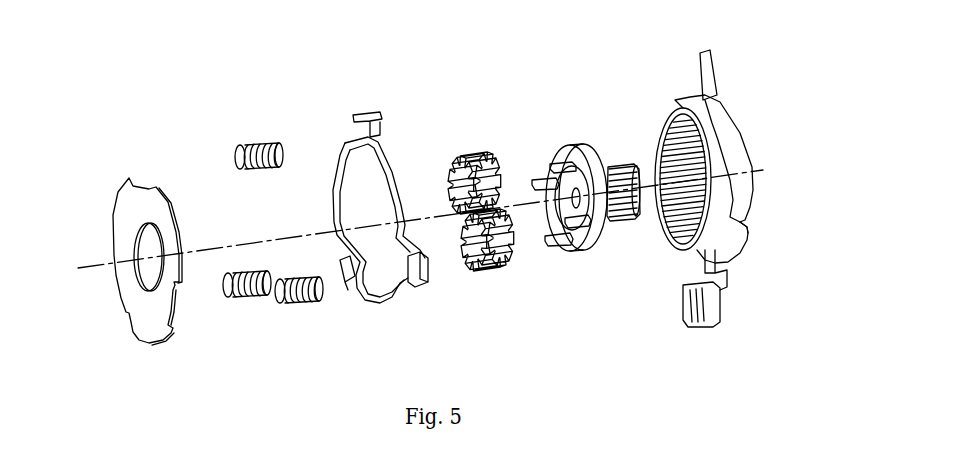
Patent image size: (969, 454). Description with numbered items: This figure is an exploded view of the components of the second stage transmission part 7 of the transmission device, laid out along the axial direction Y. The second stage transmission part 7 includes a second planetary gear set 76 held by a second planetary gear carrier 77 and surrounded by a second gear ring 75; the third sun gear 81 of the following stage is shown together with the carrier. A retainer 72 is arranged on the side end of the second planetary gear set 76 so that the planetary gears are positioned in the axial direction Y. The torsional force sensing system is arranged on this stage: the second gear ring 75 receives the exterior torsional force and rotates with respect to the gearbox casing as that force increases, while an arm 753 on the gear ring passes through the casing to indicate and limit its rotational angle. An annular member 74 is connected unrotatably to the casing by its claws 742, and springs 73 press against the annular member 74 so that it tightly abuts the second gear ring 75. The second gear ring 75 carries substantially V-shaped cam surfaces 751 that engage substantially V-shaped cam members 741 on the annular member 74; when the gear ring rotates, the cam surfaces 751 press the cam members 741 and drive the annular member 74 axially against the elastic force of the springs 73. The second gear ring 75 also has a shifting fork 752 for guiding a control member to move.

The second stage transmission part 7 is at (311, 37).
The retainer 72 is at (150, 205).
The springs 73 is at (250, 148).
The annular member 74 is at (381, 195).
The cam members 741 is at (402, 283).
The claws 742 is at (380, 120).
The second gear ring 75 is at (738, 170).
The cam surfaces 751 is at (749, 230).
The shifting fork 752 is at (712, 297).
The arm 753 is at (705, 62).
The second planetary gear set 76 is at (482, 158).
The second planetary gear carrier 77 is at (582, 148).
The third sun gear 81 is at (618, 166).
The axial direction Y is at (421, 218).